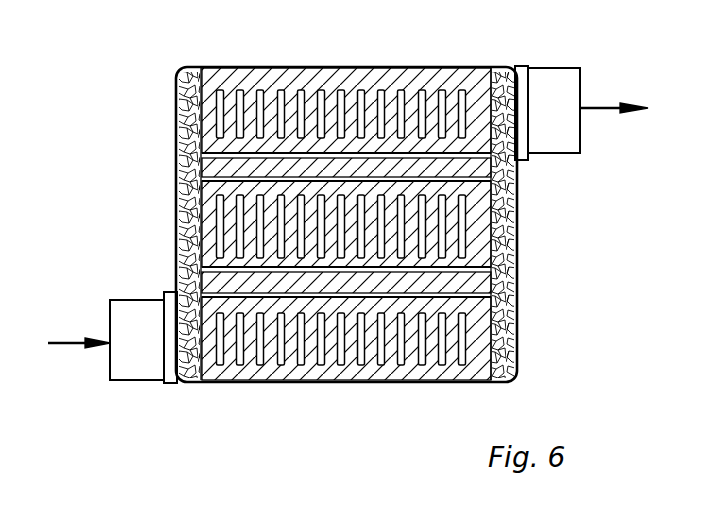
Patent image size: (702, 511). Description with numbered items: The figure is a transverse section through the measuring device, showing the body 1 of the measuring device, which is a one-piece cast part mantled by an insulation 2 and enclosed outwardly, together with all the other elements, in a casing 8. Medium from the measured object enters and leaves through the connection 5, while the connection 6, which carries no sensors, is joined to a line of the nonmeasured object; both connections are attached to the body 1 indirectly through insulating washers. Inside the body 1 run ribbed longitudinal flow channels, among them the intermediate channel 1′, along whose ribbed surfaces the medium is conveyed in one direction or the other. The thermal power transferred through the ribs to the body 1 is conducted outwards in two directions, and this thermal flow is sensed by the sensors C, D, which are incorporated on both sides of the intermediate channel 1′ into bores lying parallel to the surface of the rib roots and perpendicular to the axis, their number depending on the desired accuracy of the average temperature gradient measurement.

The body of the measuring device 1 is at (360, 368).
The intermediate longitudinal channel 1′ is at (228, 237).
The insulation 2 is at (492, 343).
The connection 5 is at (570, 140).
The connection 6 is at (120, 312).
The casing 8 is at (520, 372).
The sensor C is at (201, 180).
The sensor D is at (201, 158).